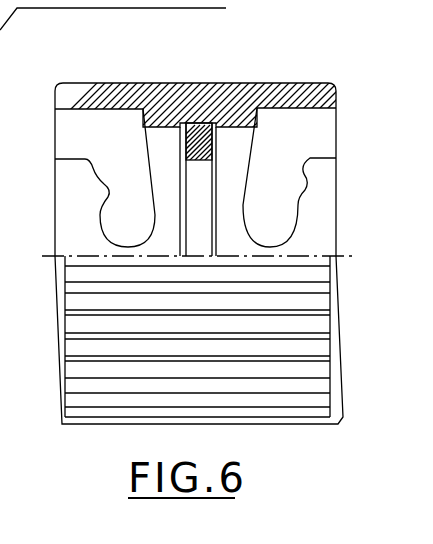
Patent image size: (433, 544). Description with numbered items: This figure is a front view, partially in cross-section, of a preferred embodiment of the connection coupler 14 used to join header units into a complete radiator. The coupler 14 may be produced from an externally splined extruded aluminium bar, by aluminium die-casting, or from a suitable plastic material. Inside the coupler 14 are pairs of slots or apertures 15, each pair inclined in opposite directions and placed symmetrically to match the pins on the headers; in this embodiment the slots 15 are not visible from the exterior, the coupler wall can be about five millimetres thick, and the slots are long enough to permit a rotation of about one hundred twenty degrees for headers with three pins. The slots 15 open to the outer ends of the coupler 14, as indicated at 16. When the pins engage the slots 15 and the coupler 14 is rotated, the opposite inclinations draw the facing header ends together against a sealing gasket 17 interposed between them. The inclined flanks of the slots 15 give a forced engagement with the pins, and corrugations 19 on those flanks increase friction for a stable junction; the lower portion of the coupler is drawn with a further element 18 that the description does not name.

The connection coupler 14 is at (343, 208).
The slots or apertures 15 is at (112, 201).
The open outer end of slot 16 is at (323, 109).
The sealing gasket 17 is at (199, 123).
The finned lower section 18 is at (277, 408).
The corrugations 19 is at (243, 204).